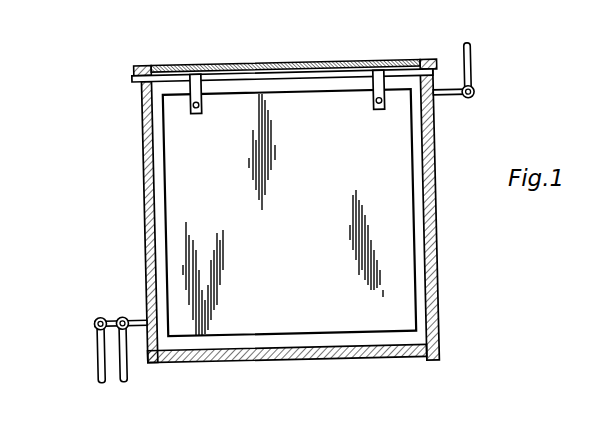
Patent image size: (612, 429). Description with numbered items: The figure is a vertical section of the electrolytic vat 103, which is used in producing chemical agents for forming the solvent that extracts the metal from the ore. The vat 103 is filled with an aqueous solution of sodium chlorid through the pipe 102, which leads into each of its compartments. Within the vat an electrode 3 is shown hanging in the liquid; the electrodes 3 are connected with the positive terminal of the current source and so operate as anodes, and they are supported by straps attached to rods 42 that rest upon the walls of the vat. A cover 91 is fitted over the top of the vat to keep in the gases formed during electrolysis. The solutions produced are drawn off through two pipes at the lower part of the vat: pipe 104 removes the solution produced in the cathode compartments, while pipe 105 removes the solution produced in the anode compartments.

The electrode (anode) 3 is at (289, 212).
The rod 42 is at (327, 72).
The cover 91 is at (243, 64).
The pipe 102 is at (472, 73).
The electrolytic vat 103 is at (437, 254).
The pipe 104 is at (92, 342).
The pipe 105 is at (123, 378).